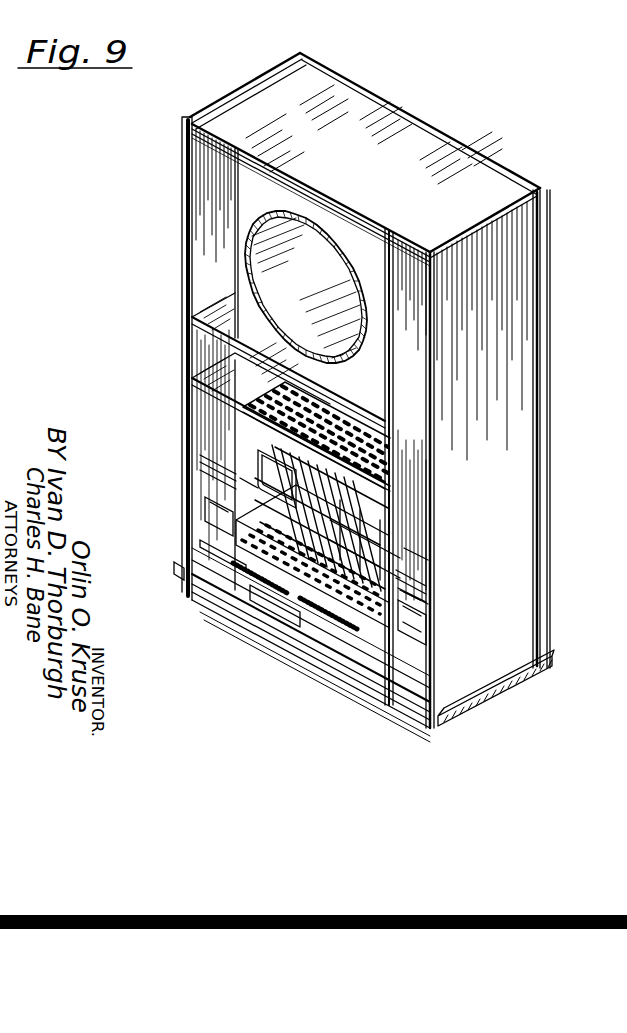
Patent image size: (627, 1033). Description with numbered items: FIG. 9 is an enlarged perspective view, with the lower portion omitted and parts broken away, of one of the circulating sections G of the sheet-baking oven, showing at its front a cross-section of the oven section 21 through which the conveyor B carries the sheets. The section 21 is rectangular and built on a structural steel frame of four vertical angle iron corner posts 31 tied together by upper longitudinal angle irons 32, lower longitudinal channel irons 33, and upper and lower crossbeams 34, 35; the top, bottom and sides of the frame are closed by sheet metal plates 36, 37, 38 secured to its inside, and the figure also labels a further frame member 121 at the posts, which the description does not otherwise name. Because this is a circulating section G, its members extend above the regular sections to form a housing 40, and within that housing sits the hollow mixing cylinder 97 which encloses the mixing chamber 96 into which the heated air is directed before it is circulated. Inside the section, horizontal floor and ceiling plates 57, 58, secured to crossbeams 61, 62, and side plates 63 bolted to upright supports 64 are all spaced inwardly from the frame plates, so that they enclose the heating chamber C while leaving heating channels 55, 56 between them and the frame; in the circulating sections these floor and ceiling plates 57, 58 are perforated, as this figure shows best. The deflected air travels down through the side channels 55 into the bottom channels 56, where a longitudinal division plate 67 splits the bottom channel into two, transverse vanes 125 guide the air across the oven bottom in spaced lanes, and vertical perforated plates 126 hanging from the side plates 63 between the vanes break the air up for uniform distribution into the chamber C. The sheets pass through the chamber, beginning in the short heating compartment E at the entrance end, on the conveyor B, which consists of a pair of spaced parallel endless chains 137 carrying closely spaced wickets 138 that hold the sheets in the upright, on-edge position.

The circulating section G is at (349, 379).
The section 21 is at (349, 379).
The vertical angle iron corner posts 31 is at (298, 55).
The upper longitudinal angle irons 32 is at (266, 82).
The lower longitudinal channel irons 33 is at (504, 698).
The upper crossbeams 34 is at (337, 257).
The lower crossbeams 35 is at (336, 650).
The top sheet metal plate 36 is at (394, 389).
The bottom sheet metal plate 37 is at (282, 604).
The side sheet metal plates 38 is at (207, 262).
The housing 40 is at (392, 125).
The heating channels 55 is at (210, 460).
The bottom heating channels 56 is at (262, 596).
The floor plate 57 is at (206, 588).
The ceiling plate 58 is at (420, 480).
The crossbeam 61 is at (240, 538).
The crossbeam 62 is at (205, 398).
The side plates 63 is at (256, 488).
The upright supports 64 is at (240, 472).
The division plate 67 is at (302, 634).
The mixing chamber 96 is at (337, 269).
The mixing cylinder 97 is at (330, 234).
The cleats 121 is at (214, 225).
The transverse vanes 125 is at (222, 508).
The vertical perforated plates 126 is at (425, 615).
The endless chains 137 is at (405, 538).
The wickets 138 is at (268, 498).
The conveyor B is at (278, 606).
The chamber C is at (246, 452).
The heating compartment E is at (242, 428).